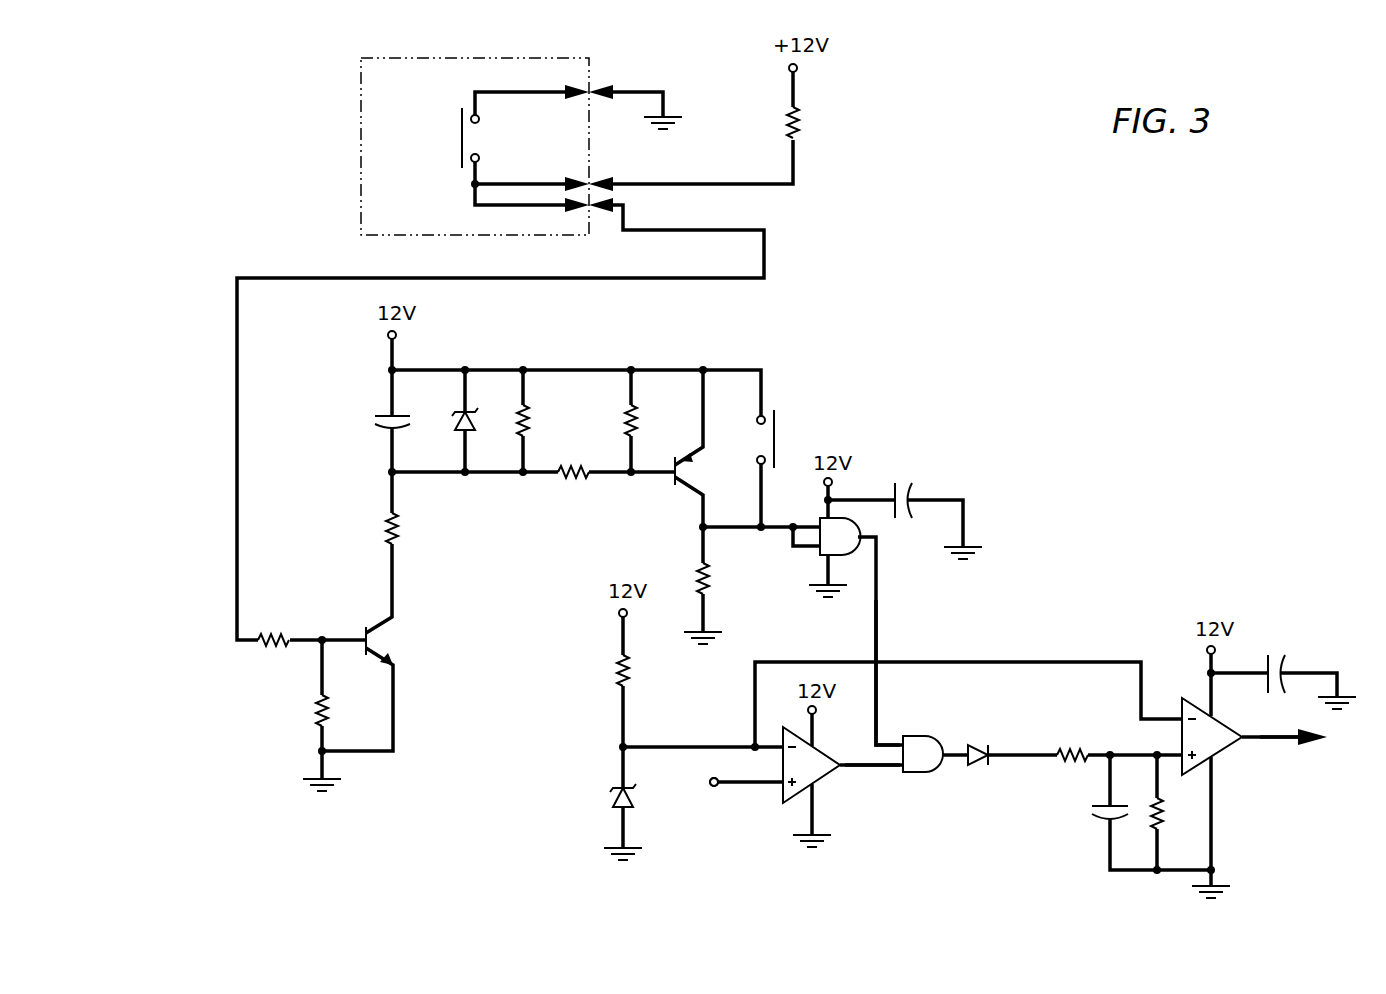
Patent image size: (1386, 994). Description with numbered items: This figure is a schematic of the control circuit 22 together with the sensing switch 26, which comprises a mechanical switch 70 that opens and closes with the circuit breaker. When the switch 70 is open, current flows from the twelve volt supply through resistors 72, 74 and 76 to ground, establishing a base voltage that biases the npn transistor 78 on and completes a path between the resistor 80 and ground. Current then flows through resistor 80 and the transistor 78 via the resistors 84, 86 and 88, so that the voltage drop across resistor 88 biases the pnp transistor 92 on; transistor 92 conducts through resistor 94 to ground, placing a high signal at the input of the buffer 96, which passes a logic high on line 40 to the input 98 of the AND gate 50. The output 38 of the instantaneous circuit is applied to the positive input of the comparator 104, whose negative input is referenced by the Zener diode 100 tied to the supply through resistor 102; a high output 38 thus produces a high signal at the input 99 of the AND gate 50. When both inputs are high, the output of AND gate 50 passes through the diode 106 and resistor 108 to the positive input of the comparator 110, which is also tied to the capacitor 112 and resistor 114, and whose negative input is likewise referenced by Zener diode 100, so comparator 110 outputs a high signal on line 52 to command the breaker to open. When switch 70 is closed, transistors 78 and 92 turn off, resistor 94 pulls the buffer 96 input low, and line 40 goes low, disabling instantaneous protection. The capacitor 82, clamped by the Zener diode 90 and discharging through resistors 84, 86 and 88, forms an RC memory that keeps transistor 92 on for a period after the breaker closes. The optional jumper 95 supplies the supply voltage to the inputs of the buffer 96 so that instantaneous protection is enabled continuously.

The control circuit 22 is at (1055, 355).
The sensing switch 26 is at (361, 145).
The output of instantaneous circuit 38 is at (752, 785).
The line 40 is at (878, 606).
The AND gate 50 is at (920, 775).
The line 52 is at (1280, 740).
The mechanical switch 70 is at (462, 128).
The resistor 72 is at (800, 120).
The resistor 74 is at (264, 645).
The resistor 76 is at (314, 708).
The npn transistor 78 is at (386, 618).
The resistor 80 is at (400, 518).
The capacitor 82 is at (375, 414).
The resistor 84 is at (535, 422).
The resistor 86 is at (575, 480).
The resistor 88 is at (645, 422).
The Zener diode 90 is at (472, 425).
The pnp transistor 92 is at (690, 452).
The resistor 94 is at (712, 580).
The jumper 95 is at (782, 422).
The buffer 96 is at (815, 556).
The input of AND gate 98 is at (888, 740).
The input of AND gate 99 is at (860, 763).
The Zener diode 100 is at (612, 798).
The resistor 102 is at (614, 665).
The comparator 104 is at (830, 775).
The diode 106 is at (978, 745).
The resistor 108 is at (1068, 762).
The comparator 110 is at (1228, 748).
The capacitor 112 is at (1092, 822).
The resistor 114 is at (1163, 818).